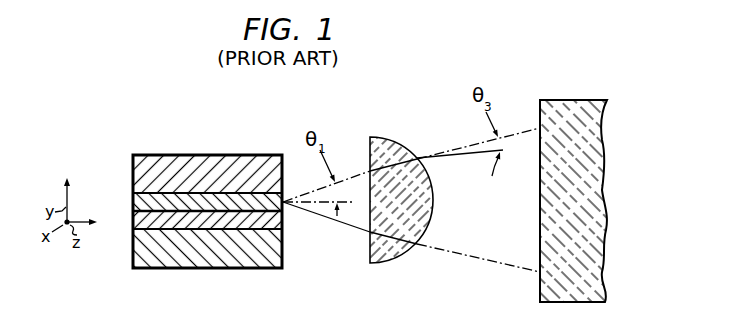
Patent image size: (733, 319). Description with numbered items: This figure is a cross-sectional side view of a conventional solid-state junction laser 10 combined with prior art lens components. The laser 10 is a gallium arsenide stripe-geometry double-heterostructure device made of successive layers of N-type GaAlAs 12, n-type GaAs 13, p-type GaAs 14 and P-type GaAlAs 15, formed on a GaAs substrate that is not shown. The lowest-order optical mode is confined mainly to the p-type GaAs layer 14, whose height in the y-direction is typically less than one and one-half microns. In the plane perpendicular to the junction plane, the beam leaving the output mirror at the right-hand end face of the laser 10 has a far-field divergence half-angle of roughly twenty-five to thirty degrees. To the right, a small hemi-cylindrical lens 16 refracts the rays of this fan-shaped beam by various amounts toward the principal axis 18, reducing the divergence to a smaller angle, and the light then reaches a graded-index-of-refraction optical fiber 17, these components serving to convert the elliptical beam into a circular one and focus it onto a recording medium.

The solid-state junction laser 10 is at (225, 144).
The N-type GaAlAs layer 12 is at (205, 264).
The n-type GaAs layer 13 is at (133, 223).
The p-type GaAs layer 14 is at (133, 206).
The P-type GaAlAs layer 15 is at (133, 172).
The hemi-cylindrical lens 16 is at (400, 145).
The graded-index-of-refraction optical fiber 17 is at (582, 100).
The principal axis 18 is at (353, 201).